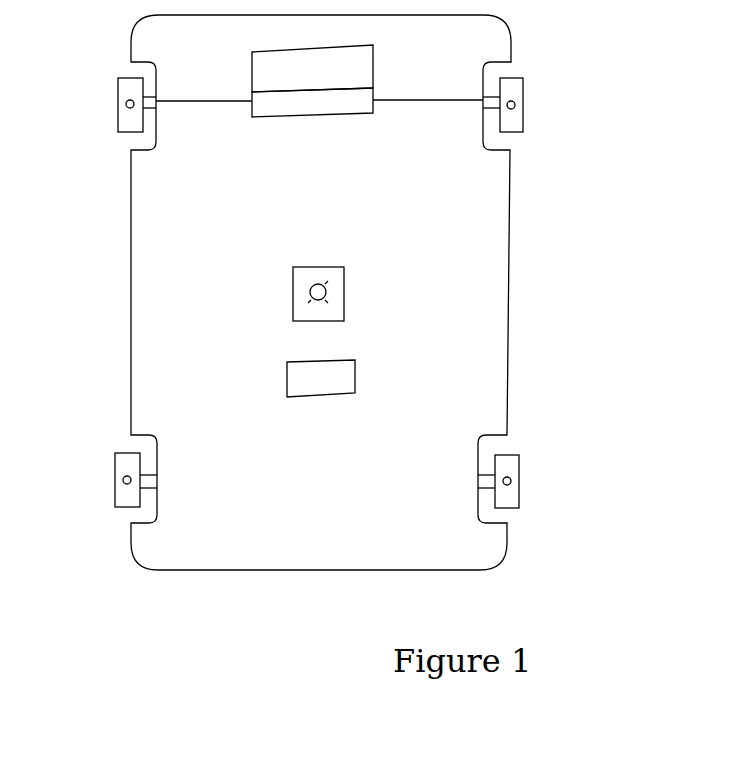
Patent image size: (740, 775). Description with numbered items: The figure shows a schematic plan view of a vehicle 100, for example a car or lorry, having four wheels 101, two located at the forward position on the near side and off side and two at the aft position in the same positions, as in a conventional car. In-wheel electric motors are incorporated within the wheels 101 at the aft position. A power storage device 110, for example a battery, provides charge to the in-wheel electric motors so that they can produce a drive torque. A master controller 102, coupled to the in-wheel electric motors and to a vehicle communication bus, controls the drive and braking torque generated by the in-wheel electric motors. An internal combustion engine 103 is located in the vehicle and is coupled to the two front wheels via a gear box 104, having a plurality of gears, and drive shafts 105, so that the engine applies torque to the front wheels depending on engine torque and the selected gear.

The vehicle 100 is at (641, 405).
The wheels 101 is at (118, 87).
The master controller 102 is at (346, 292).
The internal combustion engine 103 is at (373, 63).
The gear box 104 is at (357, 115).
The drive shafts 105 is at (207, 87).
The power storage device 110 is at (357, 378).